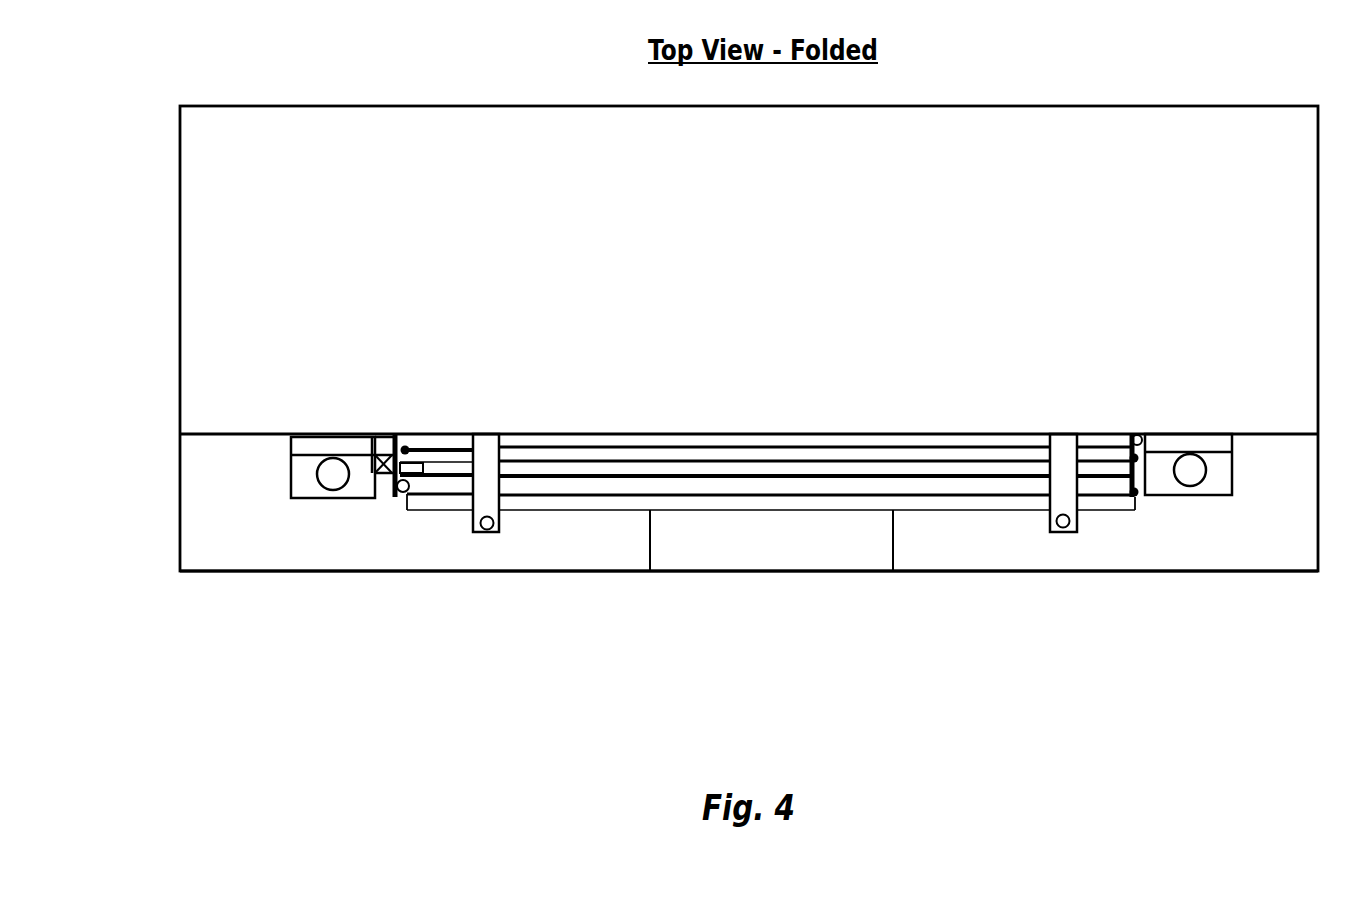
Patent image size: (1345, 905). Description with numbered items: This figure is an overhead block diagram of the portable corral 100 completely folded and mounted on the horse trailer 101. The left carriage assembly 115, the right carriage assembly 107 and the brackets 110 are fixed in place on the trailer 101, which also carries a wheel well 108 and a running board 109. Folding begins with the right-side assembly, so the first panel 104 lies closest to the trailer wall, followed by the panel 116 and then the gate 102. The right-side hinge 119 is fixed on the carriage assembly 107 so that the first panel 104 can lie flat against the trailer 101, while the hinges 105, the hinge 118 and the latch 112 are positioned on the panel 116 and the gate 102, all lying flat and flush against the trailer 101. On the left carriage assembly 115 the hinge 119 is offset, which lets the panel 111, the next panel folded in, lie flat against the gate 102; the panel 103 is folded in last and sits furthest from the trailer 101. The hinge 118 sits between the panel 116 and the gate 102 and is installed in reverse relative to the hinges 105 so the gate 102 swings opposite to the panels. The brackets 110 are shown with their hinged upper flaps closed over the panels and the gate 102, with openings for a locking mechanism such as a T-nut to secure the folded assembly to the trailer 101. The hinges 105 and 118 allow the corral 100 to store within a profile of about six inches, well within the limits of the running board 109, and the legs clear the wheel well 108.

The portable corral 100 is at (424, 383).
The horse trailer 101 is at (181, 212).
The gate 102 is at (855, 470).
The panel 103 is at (772, 503).
The first panel 104 is at (1028, 440).
The hinge 105 is at (404, 446).
The carriage assembly 107 is at (1248, 476).
The wheel well 108 is at (650, 557).
The running board 109 is at (410, 571).
The bracket 110 is at (1063, 527).
The panel 111 is at (668, 487).
The latch 112 is at (415, 470).
The carriage assembly 115 is at (276, 477).
The panel 116 is at (982, 457).
The hinge 118 is at (1134, 458).
The hinge 119 is at (403, 493).